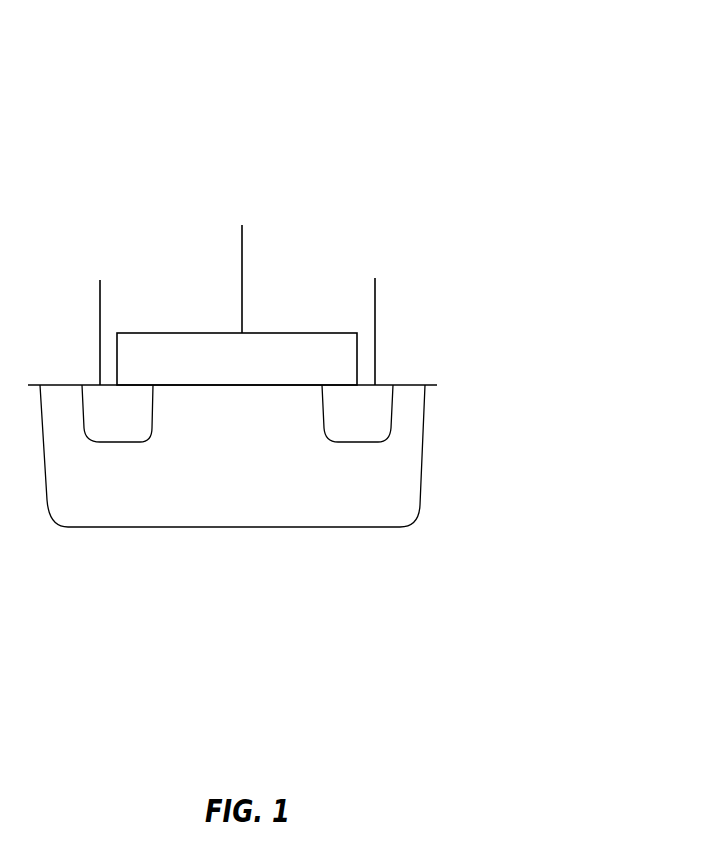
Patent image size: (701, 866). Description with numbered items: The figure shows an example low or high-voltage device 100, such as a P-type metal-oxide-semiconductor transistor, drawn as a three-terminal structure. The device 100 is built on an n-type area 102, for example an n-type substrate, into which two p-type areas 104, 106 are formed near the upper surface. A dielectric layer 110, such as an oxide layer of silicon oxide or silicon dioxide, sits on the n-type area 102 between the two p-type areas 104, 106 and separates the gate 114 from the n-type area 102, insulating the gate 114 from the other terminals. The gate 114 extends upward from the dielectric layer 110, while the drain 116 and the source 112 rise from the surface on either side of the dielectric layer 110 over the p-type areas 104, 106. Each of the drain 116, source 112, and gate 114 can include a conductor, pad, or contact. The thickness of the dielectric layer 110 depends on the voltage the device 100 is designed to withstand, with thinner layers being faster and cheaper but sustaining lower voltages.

The device 100 is at (510, 73).
The n-type area 102 is at (232, 456).
The p-type area 104 is at (153, 423).
The p-type area 106 is at (322, 423).
The dielectric layer 110 is at (145, 333).
The source 112 is at (375, 290).
The gate 114 is at (242, 237).
The drain 116 is at (100, 292).